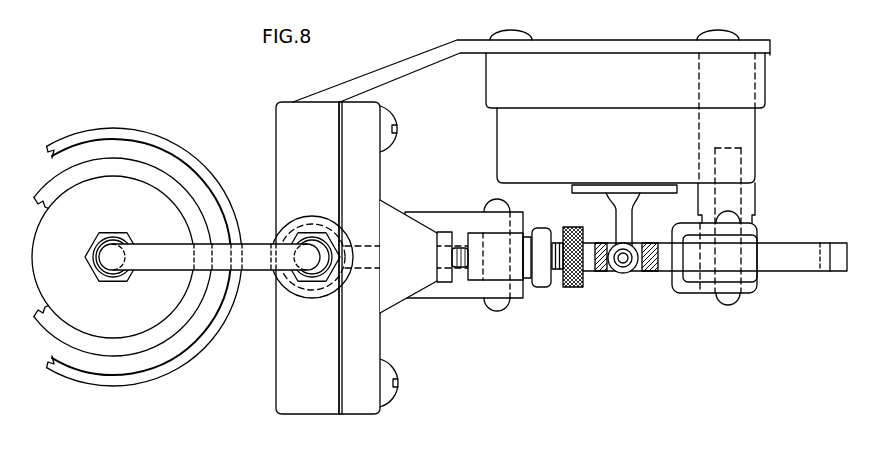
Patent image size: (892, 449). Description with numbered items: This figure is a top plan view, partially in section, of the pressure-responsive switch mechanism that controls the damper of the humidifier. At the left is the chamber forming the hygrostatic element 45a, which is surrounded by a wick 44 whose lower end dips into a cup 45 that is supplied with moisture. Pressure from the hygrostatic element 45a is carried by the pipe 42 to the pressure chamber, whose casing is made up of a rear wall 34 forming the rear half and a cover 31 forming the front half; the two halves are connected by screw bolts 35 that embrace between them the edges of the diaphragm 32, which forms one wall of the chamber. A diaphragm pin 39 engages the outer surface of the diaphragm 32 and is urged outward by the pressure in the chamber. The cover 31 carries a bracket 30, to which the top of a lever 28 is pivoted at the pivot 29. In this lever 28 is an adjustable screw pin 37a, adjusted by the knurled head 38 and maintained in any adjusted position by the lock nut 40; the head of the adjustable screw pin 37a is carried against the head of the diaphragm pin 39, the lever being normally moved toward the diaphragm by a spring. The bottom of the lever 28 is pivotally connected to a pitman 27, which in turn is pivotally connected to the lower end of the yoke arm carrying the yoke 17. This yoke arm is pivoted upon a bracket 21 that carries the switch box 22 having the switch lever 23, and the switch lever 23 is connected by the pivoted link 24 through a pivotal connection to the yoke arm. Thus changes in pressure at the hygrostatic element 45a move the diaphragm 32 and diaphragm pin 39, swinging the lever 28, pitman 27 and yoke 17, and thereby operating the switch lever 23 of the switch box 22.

The yoke 17 is at (793, 241).
The bracket 21 is at (435, 48).
The switch box 22 is at (748, 126).
The switch lever 23 is at (634, 220).
The pivoted link 24 is at (652, 273).
The pitman 27 is at (589, 243).
The lever 28 is at (507, 293).
The pivot 29 is at (495, 312).
The bracket 30 is at (455, 297).
The cover 31 is at (381, 165).
The diaphragm 32 is at (343, 408).
The rear wall 34 is at (276, 157).
The screw bolts 35 is at (396, 120).
The adjustable screw pin 37a is at (558, 271).
The knurled head 38 is at (582, 290).
The diaphragm pin 39 is at (447, 250).
The lock nut 40 is at (542, 290).
The pipe 42 is at (259, 272).
The wick 44 is at (152, 350).
The cup 45 is at (198, 362).
The hygrostatic element 45a is at (102, 327).